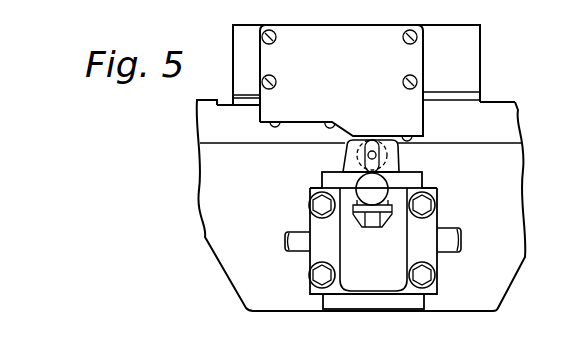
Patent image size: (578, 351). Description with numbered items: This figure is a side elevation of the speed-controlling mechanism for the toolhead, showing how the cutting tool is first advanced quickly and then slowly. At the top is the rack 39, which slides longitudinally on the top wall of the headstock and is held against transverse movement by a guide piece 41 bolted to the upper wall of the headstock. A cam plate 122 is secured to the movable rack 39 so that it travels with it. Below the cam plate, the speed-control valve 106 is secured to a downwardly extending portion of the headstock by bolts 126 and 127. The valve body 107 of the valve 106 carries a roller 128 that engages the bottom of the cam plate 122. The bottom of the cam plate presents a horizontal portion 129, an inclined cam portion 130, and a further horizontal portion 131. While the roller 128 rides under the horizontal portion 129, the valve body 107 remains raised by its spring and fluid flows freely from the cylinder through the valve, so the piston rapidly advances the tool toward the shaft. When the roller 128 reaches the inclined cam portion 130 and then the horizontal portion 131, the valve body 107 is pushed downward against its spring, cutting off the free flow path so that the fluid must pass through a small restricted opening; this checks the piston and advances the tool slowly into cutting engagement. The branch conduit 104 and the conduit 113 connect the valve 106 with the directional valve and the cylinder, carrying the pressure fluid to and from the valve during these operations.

The rack 39 is at (484, 57).
The guide piece 41 is at (507, 122).
The cam plate 122 is at (343, 60).
The horizontal portion 129 is at (278, 119).
The inclined cam portion 130 is at (330, 121).
The horizontal portion 131 is at (405, 133).
The valve body 107 is at (366, 157).
The roller 128 is at (379, 157).
The speed-control valve 106 is at (318, 190).
The bolt 127 is at (432, 206).
The bolts 126 is at (310, 275).
The branch conduit 104 is at (297, 231).
The conduit 113 is at (452, 228).